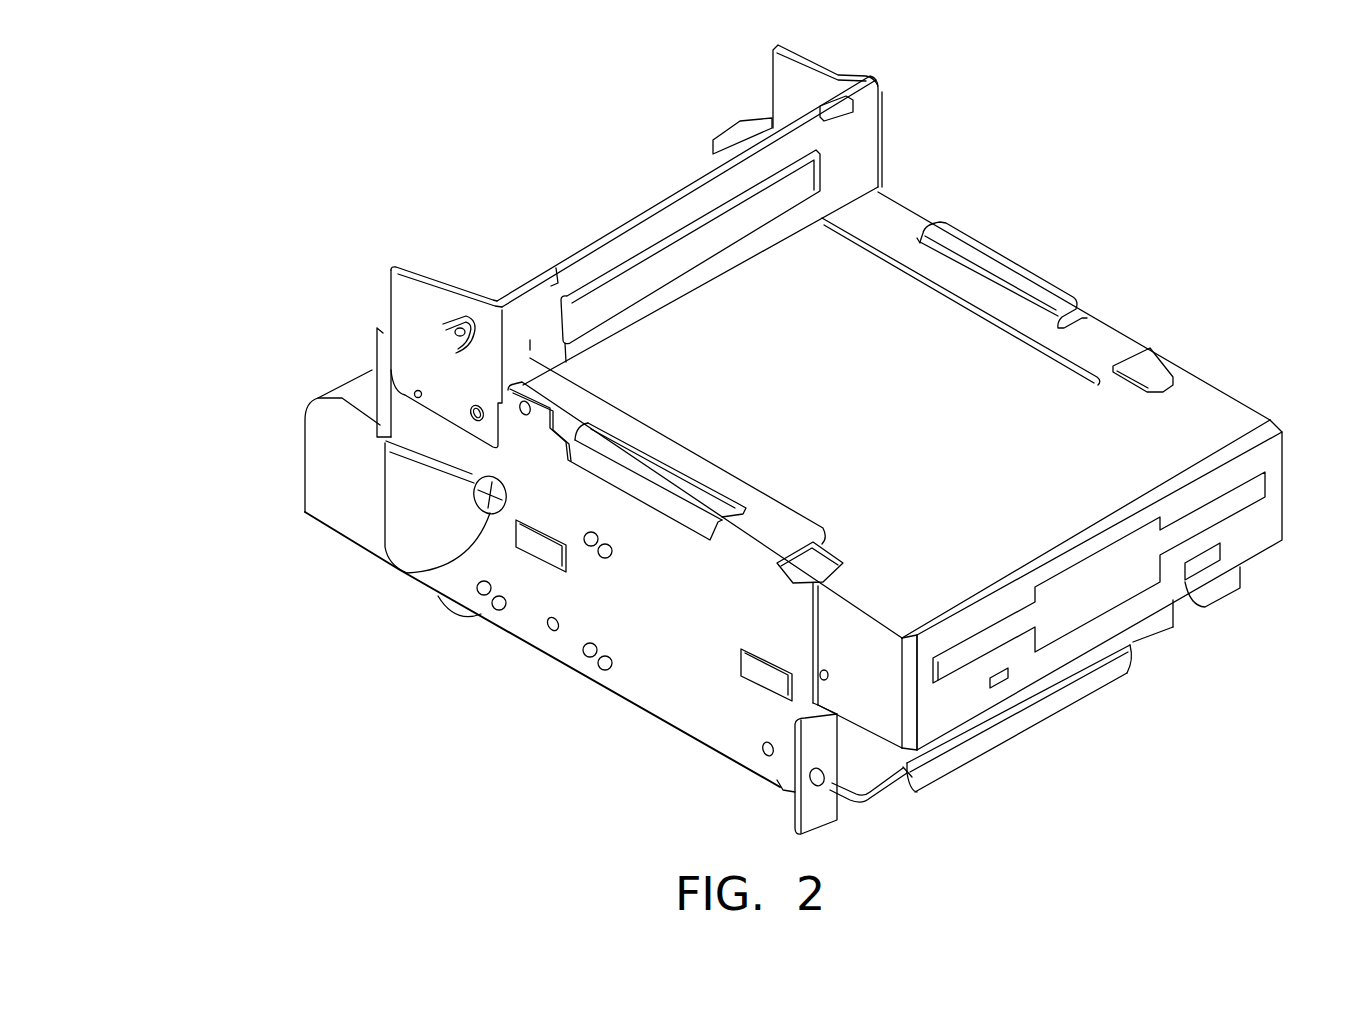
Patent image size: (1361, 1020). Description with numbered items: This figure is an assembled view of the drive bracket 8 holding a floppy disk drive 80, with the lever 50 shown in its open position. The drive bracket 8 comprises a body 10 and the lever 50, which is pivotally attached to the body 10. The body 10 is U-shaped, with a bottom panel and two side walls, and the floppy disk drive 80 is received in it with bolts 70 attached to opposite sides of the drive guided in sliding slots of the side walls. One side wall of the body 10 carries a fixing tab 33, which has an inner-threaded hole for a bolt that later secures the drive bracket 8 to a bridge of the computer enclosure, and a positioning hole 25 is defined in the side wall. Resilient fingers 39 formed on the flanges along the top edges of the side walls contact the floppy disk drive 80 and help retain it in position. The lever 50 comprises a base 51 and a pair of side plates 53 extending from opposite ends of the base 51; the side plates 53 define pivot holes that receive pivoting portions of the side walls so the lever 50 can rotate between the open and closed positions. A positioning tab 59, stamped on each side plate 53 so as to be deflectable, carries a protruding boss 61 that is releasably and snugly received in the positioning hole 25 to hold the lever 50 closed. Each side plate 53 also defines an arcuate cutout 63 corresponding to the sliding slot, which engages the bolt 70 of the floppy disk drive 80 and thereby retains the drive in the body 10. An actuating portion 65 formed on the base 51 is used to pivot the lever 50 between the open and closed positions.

The drive bracket 8 is at (1059, 252).
The body 10 is at (662, 665).
The positioning hole 25 is at (417, 395).
The fixing tab 33 is at (538, 417).
The resilient fingers 39 is at (1128, 353).
The lever 50 is at (668, 197).
The base 51 is at (527, 313).
The side plates 53 is at (795, 80).
The positioning tab 59 is at (450, 336).
The protruding boss 61 is at (458, 327).
The arcuate cutout 63 is at (420, 398).
The actuating portion 65 is at (608, 245).
The bolts 70 is at (430, 574).
The floppy disk drive 80 is at (1252, 529).